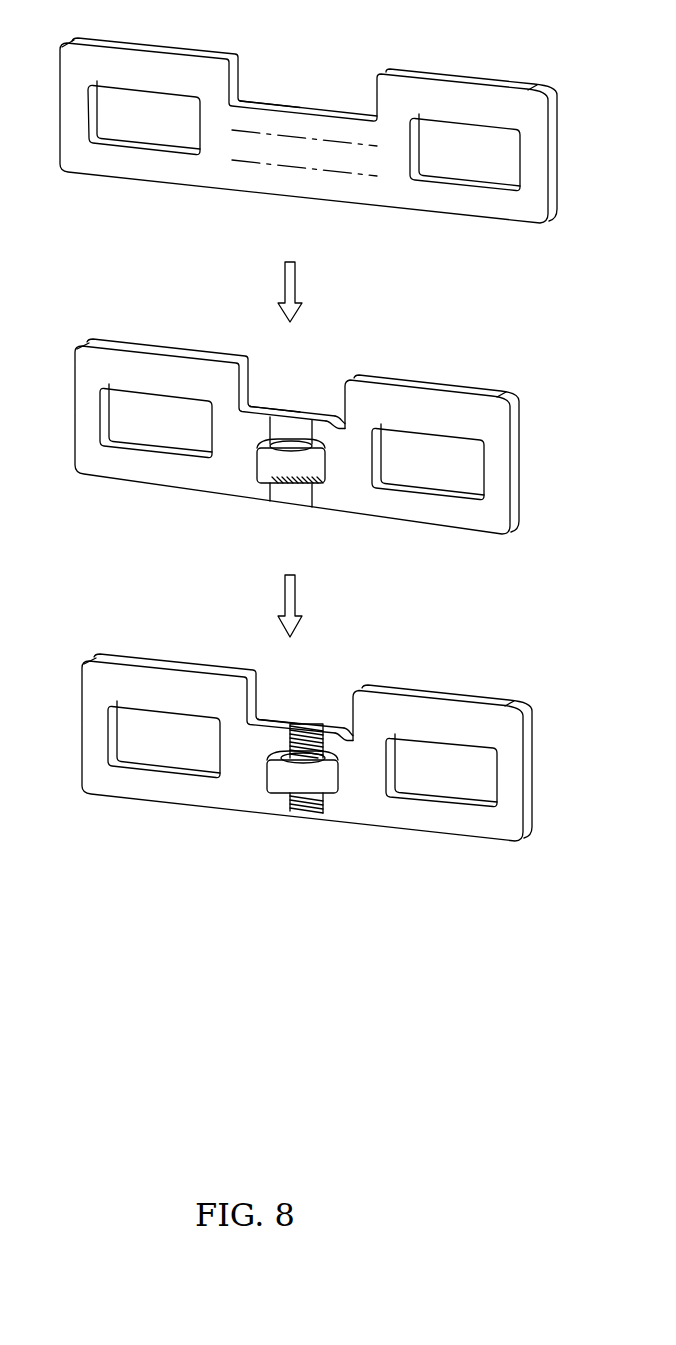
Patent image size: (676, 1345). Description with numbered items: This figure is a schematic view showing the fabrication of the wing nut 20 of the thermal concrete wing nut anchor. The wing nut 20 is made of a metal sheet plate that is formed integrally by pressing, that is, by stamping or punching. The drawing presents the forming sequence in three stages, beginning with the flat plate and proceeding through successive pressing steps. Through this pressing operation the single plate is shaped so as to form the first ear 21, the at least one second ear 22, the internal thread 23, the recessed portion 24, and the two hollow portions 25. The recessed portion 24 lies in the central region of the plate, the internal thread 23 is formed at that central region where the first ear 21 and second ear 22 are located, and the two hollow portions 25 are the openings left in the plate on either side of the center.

The wing nut 20 is at (293, 189).
The first ear 21 is at (273, 467).
The second ear 22 is at (302, 416).
The internal thread 23 is at (293, 734).
The recessed portion 24 is at (304, 88).
The hollow portions 25 is at (143, 137).